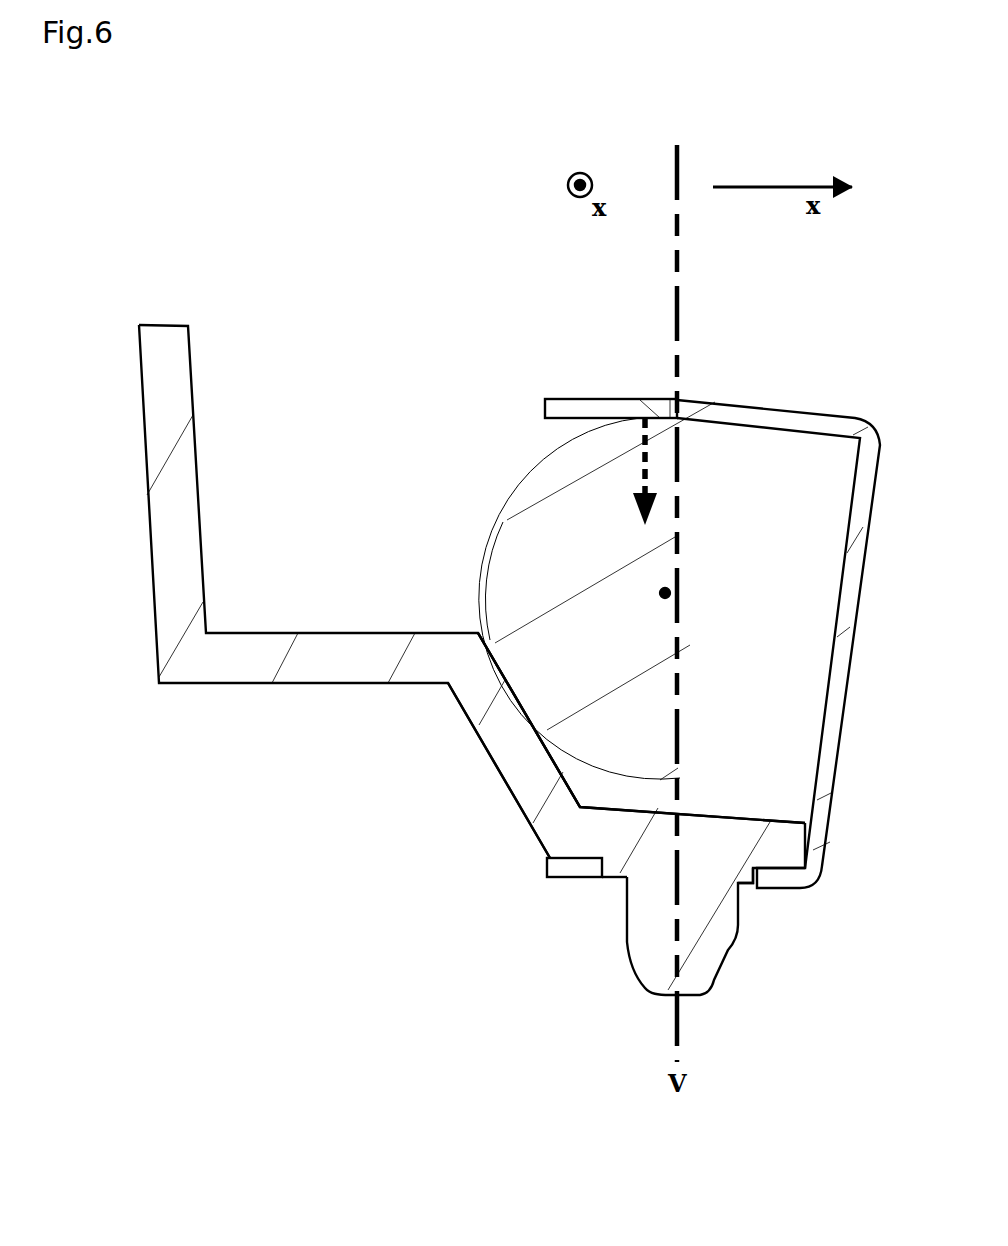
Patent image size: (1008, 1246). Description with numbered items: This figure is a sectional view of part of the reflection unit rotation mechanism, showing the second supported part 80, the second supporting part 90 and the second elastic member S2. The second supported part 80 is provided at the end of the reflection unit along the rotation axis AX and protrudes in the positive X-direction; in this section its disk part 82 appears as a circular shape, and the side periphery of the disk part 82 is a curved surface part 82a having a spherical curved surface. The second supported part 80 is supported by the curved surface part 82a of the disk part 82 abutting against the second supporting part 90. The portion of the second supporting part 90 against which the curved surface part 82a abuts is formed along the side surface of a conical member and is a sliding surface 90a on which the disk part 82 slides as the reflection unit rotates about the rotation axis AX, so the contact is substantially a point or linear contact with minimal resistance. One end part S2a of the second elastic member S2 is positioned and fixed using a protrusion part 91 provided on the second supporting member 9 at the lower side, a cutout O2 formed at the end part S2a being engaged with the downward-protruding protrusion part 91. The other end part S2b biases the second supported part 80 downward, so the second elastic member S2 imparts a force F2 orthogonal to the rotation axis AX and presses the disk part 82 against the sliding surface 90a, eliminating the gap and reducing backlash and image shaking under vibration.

The second supporting member 9 is at (298, 655).
The second supported part 80 is at (518, 475).
The disk part 82 is at (558, 582).
The curved surface part 82a is at (507, 522).
The second supporting part 90 is at (502, 730).
The sliding surface 90a is at (562, 767).
The protrusion part 91 is at (713, 925).
The second elastic member S2 is at (813, 405).
The one end part of the second elastic member S2a is at (572, 878).
The other end part of the second elastic member S2b is at (585, 400).
The cutout O2 is at (760, 878).
The rotation axis AX is at (670, 593).
The force F2 is at (638, 486).